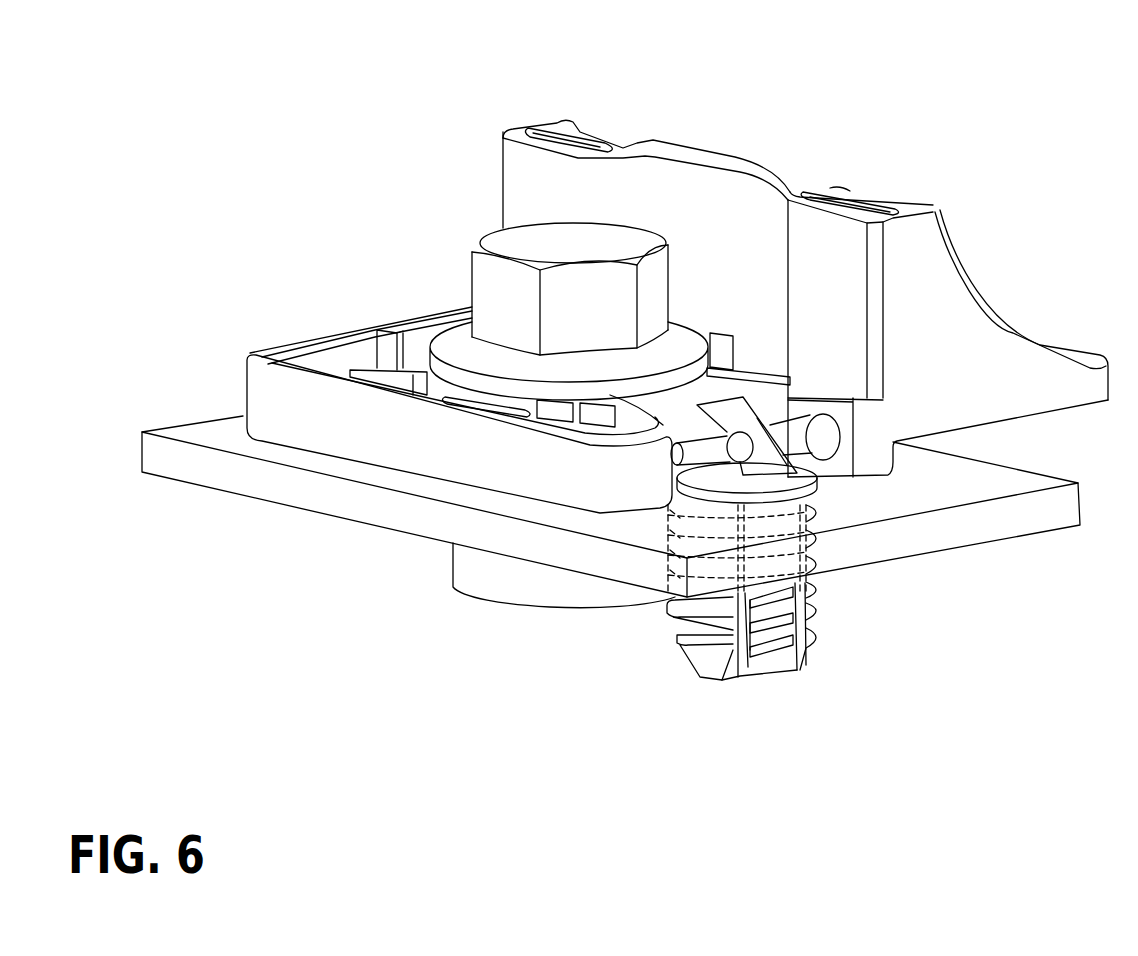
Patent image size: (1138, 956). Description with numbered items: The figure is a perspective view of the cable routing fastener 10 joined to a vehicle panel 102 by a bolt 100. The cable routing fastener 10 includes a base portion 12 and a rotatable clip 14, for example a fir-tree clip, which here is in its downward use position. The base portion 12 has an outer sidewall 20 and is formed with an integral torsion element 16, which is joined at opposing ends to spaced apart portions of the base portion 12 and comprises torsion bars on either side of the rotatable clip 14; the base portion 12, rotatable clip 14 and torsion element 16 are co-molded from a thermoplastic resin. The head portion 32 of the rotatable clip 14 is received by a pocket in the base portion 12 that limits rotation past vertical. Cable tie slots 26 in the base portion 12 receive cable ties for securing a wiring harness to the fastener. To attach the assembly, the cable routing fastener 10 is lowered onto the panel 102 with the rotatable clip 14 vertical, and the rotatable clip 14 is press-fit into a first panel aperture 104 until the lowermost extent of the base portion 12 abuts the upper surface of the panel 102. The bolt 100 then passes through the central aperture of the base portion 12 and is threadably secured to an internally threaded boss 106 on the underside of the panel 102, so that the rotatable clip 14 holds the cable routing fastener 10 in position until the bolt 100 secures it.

The cable routing fastener 10 is at (777, 109).
The base portion 12 is at (989, 367).
The rotatable clip 14 is at (822, 598).
The torsion element 16 is at (827, 433).
The outer sidewall 20 is at (442, 459).
The cable tie slots 26 is at (581, 138).
The head portion 32 is at (757, 420).
The bolt 100 is at (463, 242).
The panel 102 is at (300, 490).
The first panel aperture 104 is at (820, 503).
The internally threaded boss 106 is at (533, 597).